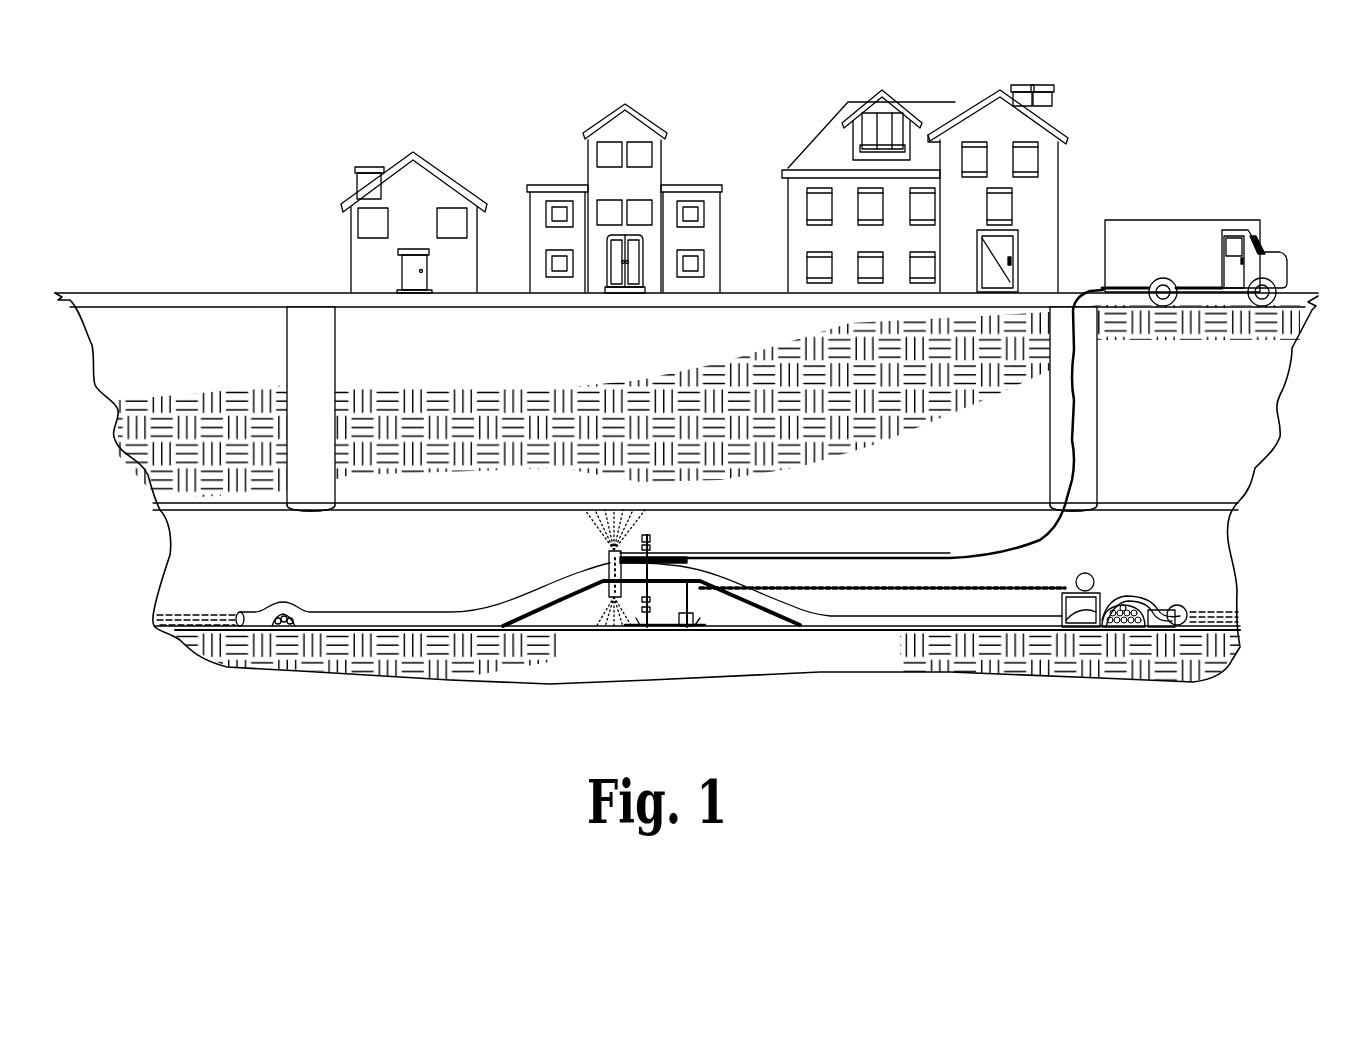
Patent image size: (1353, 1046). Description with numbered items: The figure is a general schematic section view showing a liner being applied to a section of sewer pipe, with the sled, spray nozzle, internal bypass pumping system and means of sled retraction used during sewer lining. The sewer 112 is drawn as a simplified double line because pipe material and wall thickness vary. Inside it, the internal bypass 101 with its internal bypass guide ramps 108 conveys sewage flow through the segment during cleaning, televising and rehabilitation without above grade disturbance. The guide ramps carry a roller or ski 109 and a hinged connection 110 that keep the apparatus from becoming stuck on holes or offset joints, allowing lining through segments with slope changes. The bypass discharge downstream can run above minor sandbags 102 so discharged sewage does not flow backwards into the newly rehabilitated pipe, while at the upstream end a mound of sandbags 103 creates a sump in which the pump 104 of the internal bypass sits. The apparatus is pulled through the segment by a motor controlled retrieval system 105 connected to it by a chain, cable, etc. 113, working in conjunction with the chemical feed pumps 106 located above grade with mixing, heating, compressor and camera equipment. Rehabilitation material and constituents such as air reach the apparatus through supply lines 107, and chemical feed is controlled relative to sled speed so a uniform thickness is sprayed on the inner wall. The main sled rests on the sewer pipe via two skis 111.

The internal bypass 101 is at (388, 612).
The minor sandbags 102 is at (280, 624).
The mound of sandbags 103 is at (1116, 626).
The pump 104 is at (1172, 607).
The motor controlled retrieval system 105 is at (1088, 572).
The chemical feed pumps 106 is at (1162, 220).
The supply lines 107 is at (687, 557).
The internal bypass guide ramps 108 is at (540, 616).
The roller or ski 109 is at (505, 627).
The hinged connection 110 is at (677, 585).
The skis 111 is at (638, 626).
The sewer 112 is at (780, 505).
The chain, cable, etc. 113 is at (818, 588).